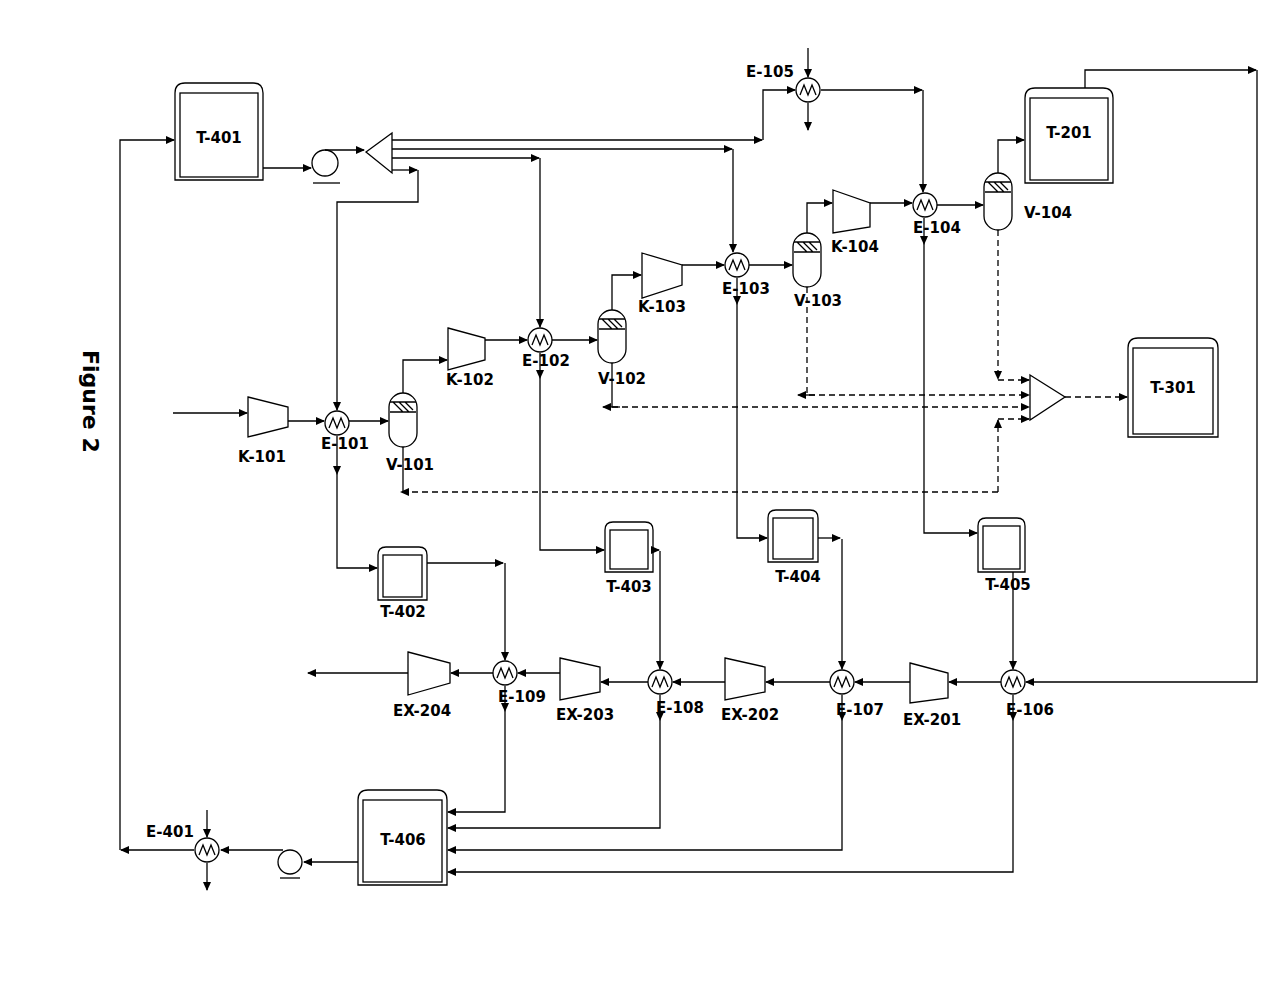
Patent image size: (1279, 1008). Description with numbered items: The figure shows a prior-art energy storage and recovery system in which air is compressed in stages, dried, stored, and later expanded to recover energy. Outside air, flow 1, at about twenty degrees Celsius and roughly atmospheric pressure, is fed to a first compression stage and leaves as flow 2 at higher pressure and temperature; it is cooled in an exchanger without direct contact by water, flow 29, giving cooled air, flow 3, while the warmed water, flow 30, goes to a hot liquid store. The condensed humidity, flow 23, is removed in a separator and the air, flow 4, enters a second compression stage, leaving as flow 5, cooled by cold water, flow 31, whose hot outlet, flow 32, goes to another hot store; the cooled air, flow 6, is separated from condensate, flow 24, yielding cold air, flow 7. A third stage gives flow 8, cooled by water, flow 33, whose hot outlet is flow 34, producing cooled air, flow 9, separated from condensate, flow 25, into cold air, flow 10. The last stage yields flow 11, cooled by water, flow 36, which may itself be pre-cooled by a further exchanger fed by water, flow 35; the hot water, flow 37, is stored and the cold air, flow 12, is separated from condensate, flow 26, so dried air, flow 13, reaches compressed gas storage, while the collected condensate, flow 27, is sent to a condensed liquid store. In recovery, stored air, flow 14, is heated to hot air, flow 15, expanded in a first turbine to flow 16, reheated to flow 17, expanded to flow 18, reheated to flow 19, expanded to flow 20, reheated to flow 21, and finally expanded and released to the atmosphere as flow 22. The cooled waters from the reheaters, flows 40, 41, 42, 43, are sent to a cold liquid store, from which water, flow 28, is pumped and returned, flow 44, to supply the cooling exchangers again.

The outside air flow 1 is at (218, 413).
The compressed air flow 2 is at (303, 421).
The cooled air flow 3 is at (368, 421).
The separated air flow 4 is at (407, 360).
The second-stage compressed air flow 5 is at (507, 340).
The cooled air flow 6 is at (577, 340).
The cold air flow 7 is at (615, 275).
The third-stage compressed air flow 8 is at (700, 265).
The cooled air flow 9 is at (763, 265).
The cold air flow 10 is at (817, 203).
The fourth-stage compressed air flow 11 is at (892, 203).
The cold air flow 12 is at (957, 205).
The dried compressed air flow 13 is at (1000, 140).
The stored air flow 14 is at (1257, 232).
The hot air flow 15 is at (975, 682).
The expanded air flow 16 is at (885, 682).
The heated air flow 17 is at (787, 682).
The expanded air flow 18 is at (698, 682).
The heated air flow 19 is at (623, 682).
The expanded air flow 20 is at (533, 673).
The heated air flow 21 is at (472, 673).
The exhaust air flow 22 is at (345, 673).
The condensed humidity flow 23 is at (473, 492).
The condensed humidity flow 24 is at (687, 407).
The condensed humidity flow 25 is at (892, 395).
The condensed humidity flow 26 is at (998, 265).
The condensed liquid flow 27 is at (1090, 397).
The cold water flow 28 is at (297, 168).
The cooling water flow 29 is at (337, 260).
The heated water flow 30 is at (337, 548).
The cold water flow 31 is at (540, 210).
The hot water flow 32 is at (540, 443).
The cold water flow 33 is at (733, 175).
The hot water flow 34 is at (737, 462).
The cold water flow 35 is at (647, 140).
The cold water flow 36 is at (880, 90).
The hot water flow 37 is at (924, 445).
The cooled water flow 40 is at (1013, 790).
The cooled water flow 41 is at (842, 788).
The cooled water flow 42 is at (660, 767).
The cooled water flow 43 is at (505, 772).
The recycled water flow 44 is at (120, 632).